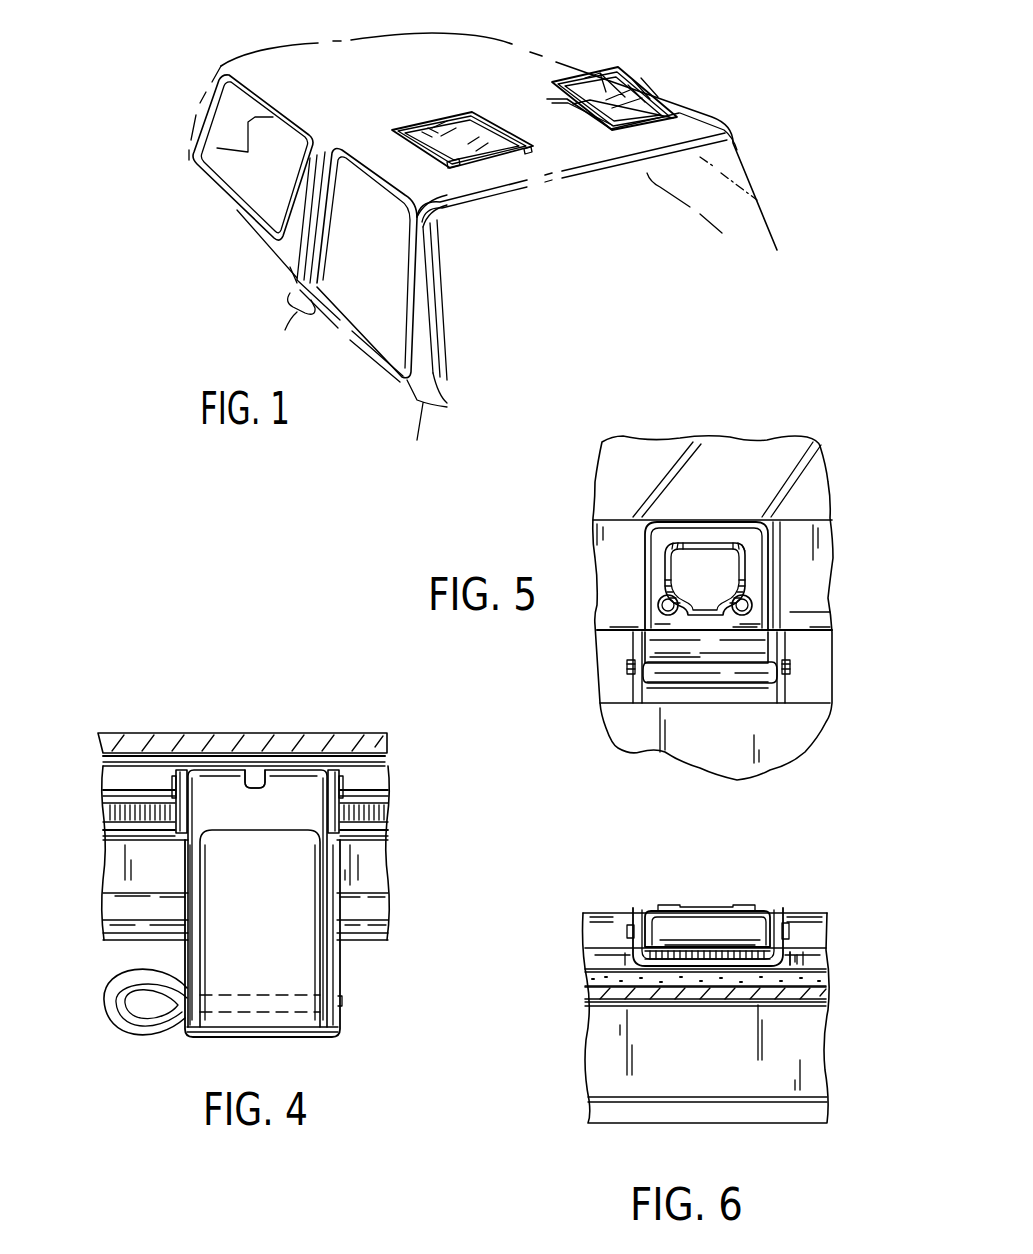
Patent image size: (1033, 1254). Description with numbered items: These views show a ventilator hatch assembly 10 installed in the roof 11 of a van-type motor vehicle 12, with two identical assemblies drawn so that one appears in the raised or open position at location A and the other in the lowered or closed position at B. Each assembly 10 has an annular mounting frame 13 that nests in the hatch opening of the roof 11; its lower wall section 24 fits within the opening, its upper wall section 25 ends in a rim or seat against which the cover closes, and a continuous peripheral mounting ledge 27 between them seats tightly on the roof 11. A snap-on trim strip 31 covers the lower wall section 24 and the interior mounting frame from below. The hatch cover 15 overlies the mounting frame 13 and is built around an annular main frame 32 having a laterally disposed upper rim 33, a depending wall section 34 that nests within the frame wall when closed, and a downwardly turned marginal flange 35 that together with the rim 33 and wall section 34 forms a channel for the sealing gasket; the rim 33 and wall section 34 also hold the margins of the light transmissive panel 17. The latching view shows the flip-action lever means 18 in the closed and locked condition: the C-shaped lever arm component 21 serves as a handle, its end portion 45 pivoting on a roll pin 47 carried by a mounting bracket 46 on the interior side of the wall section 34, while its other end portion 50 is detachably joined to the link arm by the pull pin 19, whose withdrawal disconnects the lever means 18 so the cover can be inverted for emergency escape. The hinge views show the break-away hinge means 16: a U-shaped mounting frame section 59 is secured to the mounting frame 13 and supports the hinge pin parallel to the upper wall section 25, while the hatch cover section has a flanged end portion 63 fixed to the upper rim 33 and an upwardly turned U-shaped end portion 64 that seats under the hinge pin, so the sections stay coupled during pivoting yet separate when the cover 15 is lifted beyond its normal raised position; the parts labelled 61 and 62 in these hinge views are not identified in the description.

In FIG. 1, the ventilator hatch assembly 10 is at (449, 110).
In FIG. 1, the roof 11 is at (476, 74).
In FIG. 5, the roof 11 is at (741, 756).
In FIG. 6, the roof 11 is at (823, 988).
In FIG. 1, the van-type motor vehicle 12 is at (257, 246).
In FIG. 1, the open position A is at (665, 95).
In FIG. 1, the closed position B is at (499, 119).
In FIG. 4, the mounting frame 13 is at (98, 858).
In FIG. 4, the hatch cover 15 is at (92, 812).
In FIG. 5, the hinge means 16 is at (788, 573).
In FIG. 6, the hinge means 16 is at (760, 900).
In FIG. 4, the light transmissive panel 17 is at (390, 746).
In FIG. 5, the light transmissive panel 17 is at (748, 482).
In FIG. 4, the flip-action lever means 18 is at (347, 1040).
In FIG. 4, the pull pin 19 is at (120, 1032).
In FIG. 4, the lever arm component 21 is at (330, 986).
In FIG. 4, the lower wall section 24 is at (395, 866).
In FIG. 6, the upper wall section 25 is at (600, 963).
In FIG. 5, the mounting ledge 27 is at (620, 653).
In FIG. 6, the mounting ledge 27 is at (805, 967).
In FIG. 4, the trim strip 31 is at (393, 919).
In FIG. 5, the main frame 32 is at (823, 611).
In FIG. 4, the upper rim 33 is at (110, 730).
In FIG. 4, the wall section 34 is at (392, 812).
In FIG. 6, the marginal flange 35 is at (607, 937).
In FIG. 4, the end portion 45 is at (213, 770).
In FIG. 4, the mounting bracket 46 is at (183, 768).
In FIG. 4, the roll pin 47 is at (175, 782).
In FIG. 4, the end portion 50 is at (224, 1038).
In FIG. 5, the mounting frame section 59 is at (685, 698).
In FIG. 6, the mounting frame section 59 is at (687, 963).
In FIG. 5, the bolt 61 is at (627, 670).
In FIG. 6, the bolt 61 is at (791, 934).
In FIG. 5, the retaining plate 62 is at (707, 597).
In FIG. 6, the retaining plate 62 is at (697, 905).
In FIG. 5, the flanged end portion 63 is at (697, 535).
In FIG. 5, the upwardly turned end portion 64 is at (670, 680).
In FIG. 6, the upwardly turned end portion 64 is at (776, 921).